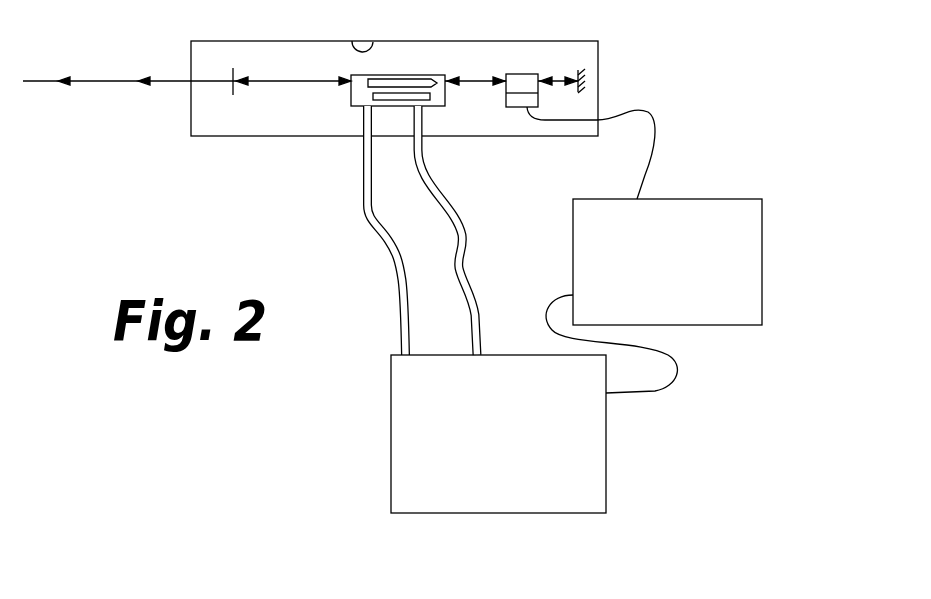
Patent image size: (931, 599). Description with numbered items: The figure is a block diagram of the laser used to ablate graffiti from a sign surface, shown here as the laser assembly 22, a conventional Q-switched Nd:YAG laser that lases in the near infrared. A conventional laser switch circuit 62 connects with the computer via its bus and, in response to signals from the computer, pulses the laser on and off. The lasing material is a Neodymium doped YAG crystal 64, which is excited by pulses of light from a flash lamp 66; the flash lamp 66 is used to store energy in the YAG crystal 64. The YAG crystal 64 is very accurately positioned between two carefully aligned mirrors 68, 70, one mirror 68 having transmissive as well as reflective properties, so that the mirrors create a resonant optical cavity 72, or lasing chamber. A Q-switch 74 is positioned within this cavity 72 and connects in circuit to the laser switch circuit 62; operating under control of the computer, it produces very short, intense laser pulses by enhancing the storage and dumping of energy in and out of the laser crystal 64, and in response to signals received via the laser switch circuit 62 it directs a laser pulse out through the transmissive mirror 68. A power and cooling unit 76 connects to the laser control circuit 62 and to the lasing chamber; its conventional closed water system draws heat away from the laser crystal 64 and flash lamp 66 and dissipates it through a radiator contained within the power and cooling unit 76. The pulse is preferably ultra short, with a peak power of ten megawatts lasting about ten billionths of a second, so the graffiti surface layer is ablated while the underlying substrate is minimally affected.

The laser head 22 is at (605, 63).
The laser switch circuit 62 is at (761, 243).
The YAG crystal 64 is at (445, 76).
The flash lamp 66 is at (430, 97).
The mirror 68 is at (233, 70).
The mirror 70 is at (578, 71).
The resonant optical cavity 72 is at (386, 31).
The Q-switch 74 is at (522, 74).
The power and cooling unit 76 is at (517, 354).